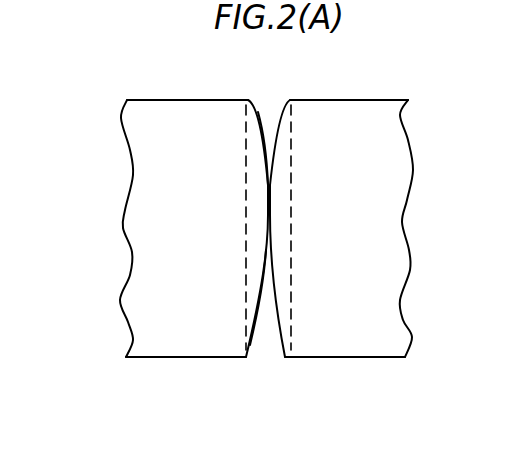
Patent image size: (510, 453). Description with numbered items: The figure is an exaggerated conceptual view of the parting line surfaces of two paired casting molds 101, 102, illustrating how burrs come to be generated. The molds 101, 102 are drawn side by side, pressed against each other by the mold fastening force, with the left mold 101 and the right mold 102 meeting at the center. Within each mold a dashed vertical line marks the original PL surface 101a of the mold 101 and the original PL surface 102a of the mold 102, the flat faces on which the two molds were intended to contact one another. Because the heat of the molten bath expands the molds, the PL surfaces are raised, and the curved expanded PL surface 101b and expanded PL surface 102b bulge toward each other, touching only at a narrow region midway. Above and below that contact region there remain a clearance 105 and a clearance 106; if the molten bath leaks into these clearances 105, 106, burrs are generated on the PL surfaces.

The mold 101 is at (165, 128).
The mold 102 is at (365, 130).
The original PL surface 101a is at (245, 210).
The expanded PL surface 101b is at (262, 152).
The original PL surface 102a is at (292, 215).
The expanded PL surface 102b is at (277, 167).
The clearance 105 is at (270, 125).
The clearance 106 is at (263, 340).